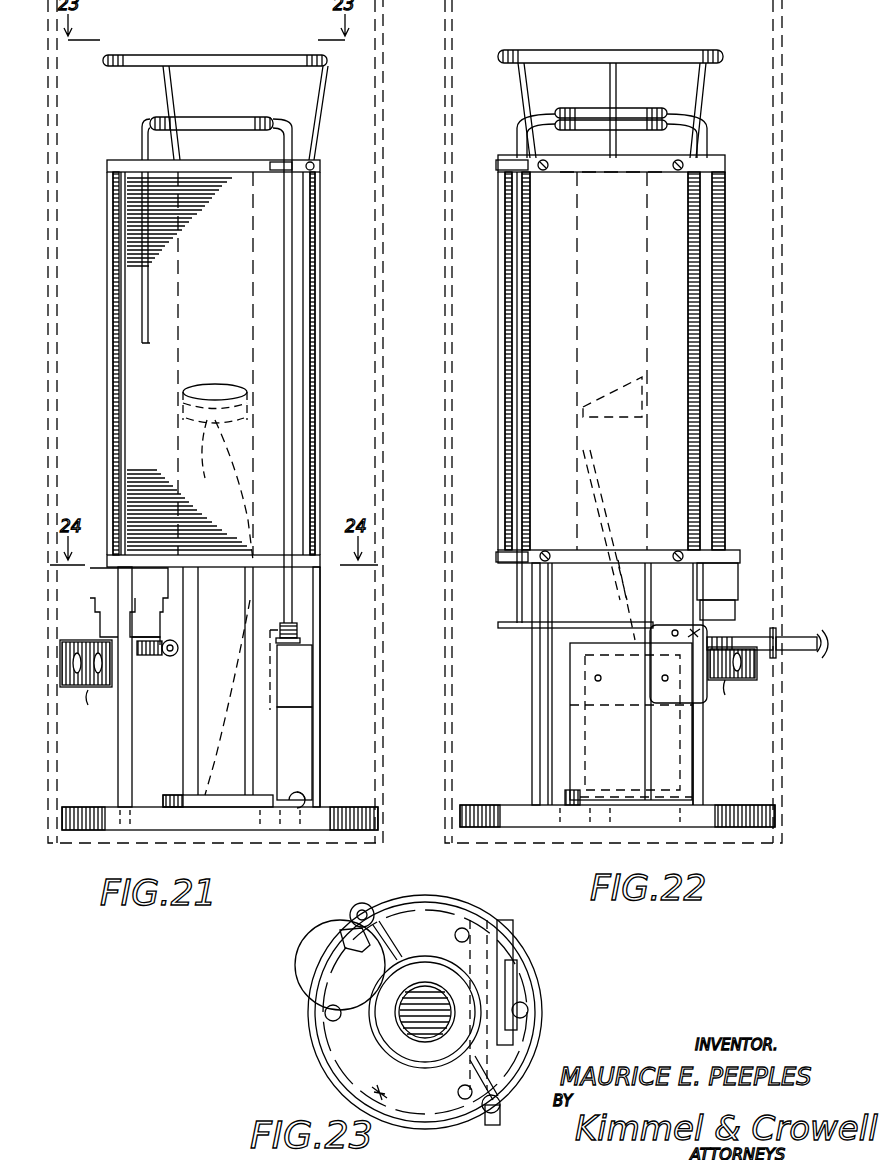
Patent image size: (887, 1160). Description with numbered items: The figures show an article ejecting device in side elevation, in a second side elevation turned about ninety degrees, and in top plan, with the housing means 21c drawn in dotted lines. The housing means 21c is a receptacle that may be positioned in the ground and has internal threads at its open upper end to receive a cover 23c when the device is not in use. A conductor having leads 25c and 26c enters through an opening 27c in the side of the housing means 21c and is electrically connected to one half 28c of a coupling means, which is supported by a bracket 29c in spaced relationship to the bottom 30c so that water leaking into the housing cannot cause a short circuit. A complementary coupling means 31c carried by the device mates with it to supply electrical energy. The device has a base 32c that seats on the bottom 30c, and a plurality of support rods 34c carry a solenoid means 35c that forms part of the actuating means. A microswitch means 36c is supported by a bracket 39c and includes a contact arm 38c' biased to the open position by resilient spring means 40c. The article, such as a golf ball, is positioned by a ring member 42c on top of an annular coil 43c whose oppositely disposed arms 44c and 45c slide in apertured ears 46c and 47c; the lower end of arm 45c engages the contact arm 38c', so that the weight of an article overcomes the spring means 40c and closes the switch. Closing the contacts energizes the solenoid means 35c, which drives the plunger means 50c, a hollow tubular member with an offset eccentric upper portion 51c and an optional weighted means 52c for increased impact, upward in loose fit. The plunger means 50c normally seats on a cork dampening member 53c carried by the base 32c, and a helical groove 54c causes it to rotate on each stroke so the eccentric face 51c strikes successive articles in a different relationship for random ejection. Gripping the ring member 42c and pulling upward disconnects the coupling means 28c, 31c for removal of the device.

In FIG. 21, the housing means 21c is at (383, 250).
In FIG. 22, the housing means 21c is at (782, 170).
In FIG. 21, the cover 23c is at (158, 657).
In FIG. 22, the cover 23c is at (800, 635).
In FIG. 22, the lead 25c is at (805, 664).
In FIG. 22, the lead 26c is at (822, 660).
In FIG. 21, the opening 27c is at (180, 645).
In FIG. 22, the opening 27c is at (788, 625).
In FIG. 21, the coupling means half 28c is at (98, 625).
In FIG. 22, the coupling means half 28c is at (740, 612).
In FIG. 21, the bracket 29c is at (86, 707).
In FIG. 22, the bracket 29c is at (741, 695).
In FIG. 21, the bottom 30c is at (115, 845).
In FIG. 22, the bottom 30c is at (722, 832).
In FIG. 21, the complementary coupling means 31c is at (98, 580).
In FIG. 22, the complementary coupling means 31c is at (740, 565).
In FIG. 23, the complementary coupling means 31c is at (304, 982).
In FIG. 21, the base 32c is at (338, 805).
In FIG. 22, the base 32c is at (510, 810).
In FIG. 21, the support rods 34c is at (125, 730).
In FIG. 22, the support rods 34c is at (538, 672).
In FIG. 23, the support rods 34c is at (465, 912).
In FIG. 21, the solenoid means 35c is at (140, 200).
In FIG. 22, the solenoid means 35c is at (700, 370).
In FIG. 23, the solenoid means 35c is at (520, 970).
In FIG. 21, the microswitch means 36c is at (302, 665).
In FIG. 22, the microswitch means 36c is at (700, 690).
In FIG. 23, the microswitch means 36c is at (515, 922).
In FIG. 21, the contact arm 38c' is at (314, 618).
In FIG. 22, the contact arm 38c' is at (558, 604).
In FIG. 23, the contact arm 38c' is at (540, 1004).
In FIG. 21, the bracket 39c is at (320, 732).
In FIG. 22, the bracket 39c is at (698, 745).
In FIG. 22, the resilient spring means 40c is at (620, 645).
In FIG. 21, the ring member 42c is at (210, 58).
In FIG. 22, the ring member 42c is at (567, 50).
In FIG. 23, the ring member 42c is at (418, 905).
In FIG. 21, the annular coil 43c is at (228, 122).
In FIG. 22, the annular coil 43c is at (650, 115).
In FIG. 23, the annular coil 43c is at (420, 952).
In FIG. 21, the arm 44c is at (140, 133).
In FIG. 22, the arm 44c is at (712, 128).
In FIG. 23, the arm 44c is at (366, 905).
In FIG. 21, the arm 45c is at (288, 128).
In FIG. 22, the arm 45c is at (512, 142).
In FIG. 23, the arm 45c is at (500, 1118).
In FIG. 23, the apertured ear 46c is at (348, 912).
In FIG. 21, the apertured ear 47c is at (272, 172).
In FIG. 22, the apertured ear 47c is at (500, 175).
In FIG. 23, the apertured ear 47c is at (488, 1122).
In FIG. 21, the plunger means 50c is at (198, 703).
In FIG. 22, the plunger means 50c is at (593, 585).
In FIG. 21, the offset eccentric upper portion 51c is at (215, 385).
In FIG. 22, the offset eccentric upper portion 51c is at (615, 390).
In FIG. 23, the offset eccentric upper portion 51c is at (402, 1017).
In FIG. 21, the weighted means 52c is at (207, 455).
In FIG. 21, the dampening member 53c is at (175, 795).
In FIG. 22, the dampening member 53c is at (565, 792).
In FIG. 21, the helical groove 54c is at (226, 728).
In FIG. 22, the helical groove 54c is at (620, 595).